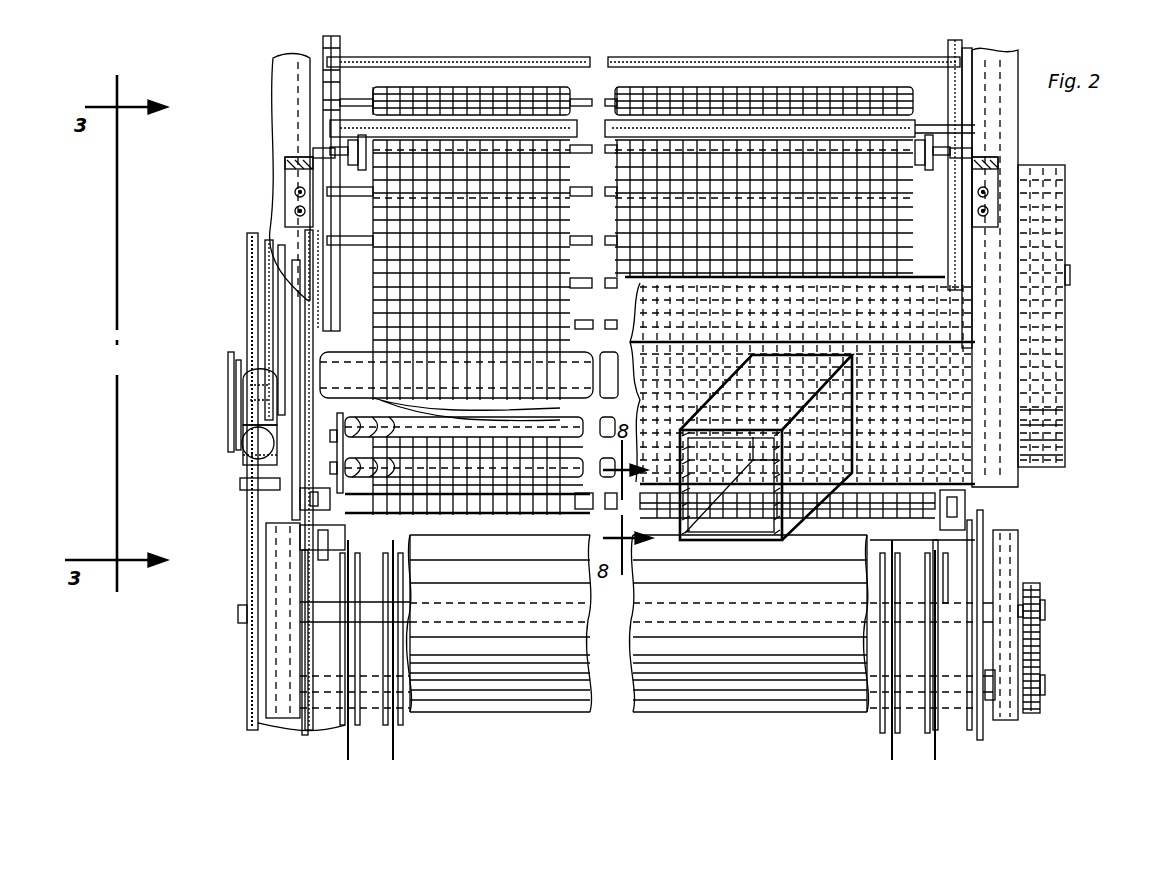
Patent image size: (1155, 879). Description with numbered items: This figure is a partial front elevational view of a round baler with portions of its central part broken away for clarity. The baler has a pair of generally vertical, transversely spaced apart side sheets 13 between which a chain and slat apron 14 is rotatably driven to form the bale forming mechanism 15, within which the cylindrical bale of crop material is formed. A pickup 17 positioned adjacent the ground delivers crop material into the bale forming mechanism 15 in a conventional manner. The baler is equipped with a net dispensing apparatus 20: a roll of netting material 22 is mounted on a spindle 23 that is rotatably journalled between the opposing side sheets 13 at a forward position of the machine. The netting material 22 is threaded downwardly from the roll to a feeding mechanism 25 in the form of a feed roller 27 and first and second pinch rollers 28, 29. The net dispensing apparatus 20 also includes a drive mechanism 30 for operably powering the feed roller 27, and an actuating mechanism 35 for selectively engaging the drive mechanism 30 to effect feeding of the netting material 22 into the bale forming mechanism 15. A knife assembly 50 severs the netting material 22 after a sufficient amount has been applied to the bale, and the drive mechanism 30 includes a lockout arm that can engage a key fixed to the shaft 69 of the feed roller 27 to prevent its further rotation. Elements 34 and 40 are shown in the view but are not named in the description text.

The side sheets 13 is at (982, 52).
The chain and slat apron 14 is at (535, 58).
The bale forming mechanism 15 is at (372, 48).
The pickup 17 is at (890, 742).
The net dispensing apparatus 20 is at (276, 57).
The roll of netting material 22 is at (665, 87).
The spindle 23 is at (314, 150).
The feeding mechanism 25 is at (960, 472).
The feed roller 27 is at (268, 508).
The first pinch roller 28 is at (463, 423).
The second pinch roller 29 is at (347, 460).
The drive mechanism 30 is at (172, 345).
The lower frame plate 34 is at (250, 632).
The actuating mechanism 35 is at (242, 447).
The tensioner assembly 40 is at (184, 405).
The knife assembly 50 is at (590, 578).
The shaft 69 is at (262, 488).